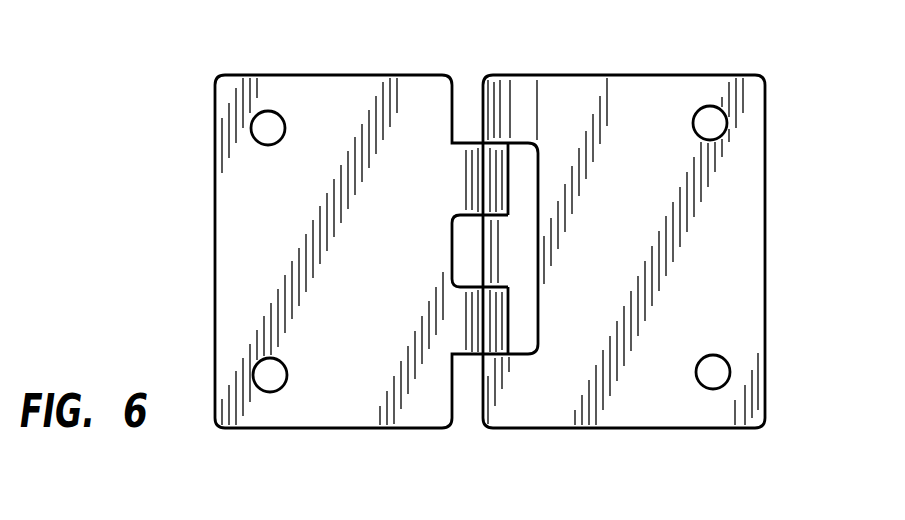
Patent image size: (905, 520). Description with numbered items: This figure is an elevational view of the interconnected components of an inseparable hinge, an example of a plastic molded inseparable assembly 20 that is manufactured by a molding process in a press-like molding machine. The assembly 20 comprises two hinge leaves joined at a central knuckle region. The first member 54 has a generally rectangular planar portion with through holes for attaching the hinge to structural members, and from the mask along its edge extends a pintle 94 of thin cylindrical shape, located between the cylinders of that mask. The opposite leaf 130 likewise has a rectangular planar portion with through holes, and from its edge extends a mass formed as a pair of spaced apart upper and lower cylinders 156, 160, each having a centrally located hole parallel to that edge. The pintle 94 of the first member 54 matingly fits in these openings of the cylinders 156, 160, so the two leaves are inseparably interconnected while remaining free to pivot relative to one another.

The plastic molded inseparable assembly 20 is at (207, 80).
The first hinge leaf 130 is at (310, 75).
The first member 54 is at (682, 70).
The upper cylinder 156 is at (488, 175).
The pintle 94 is at (502, 271).
The lower cylinder 160 is at (493, 322).